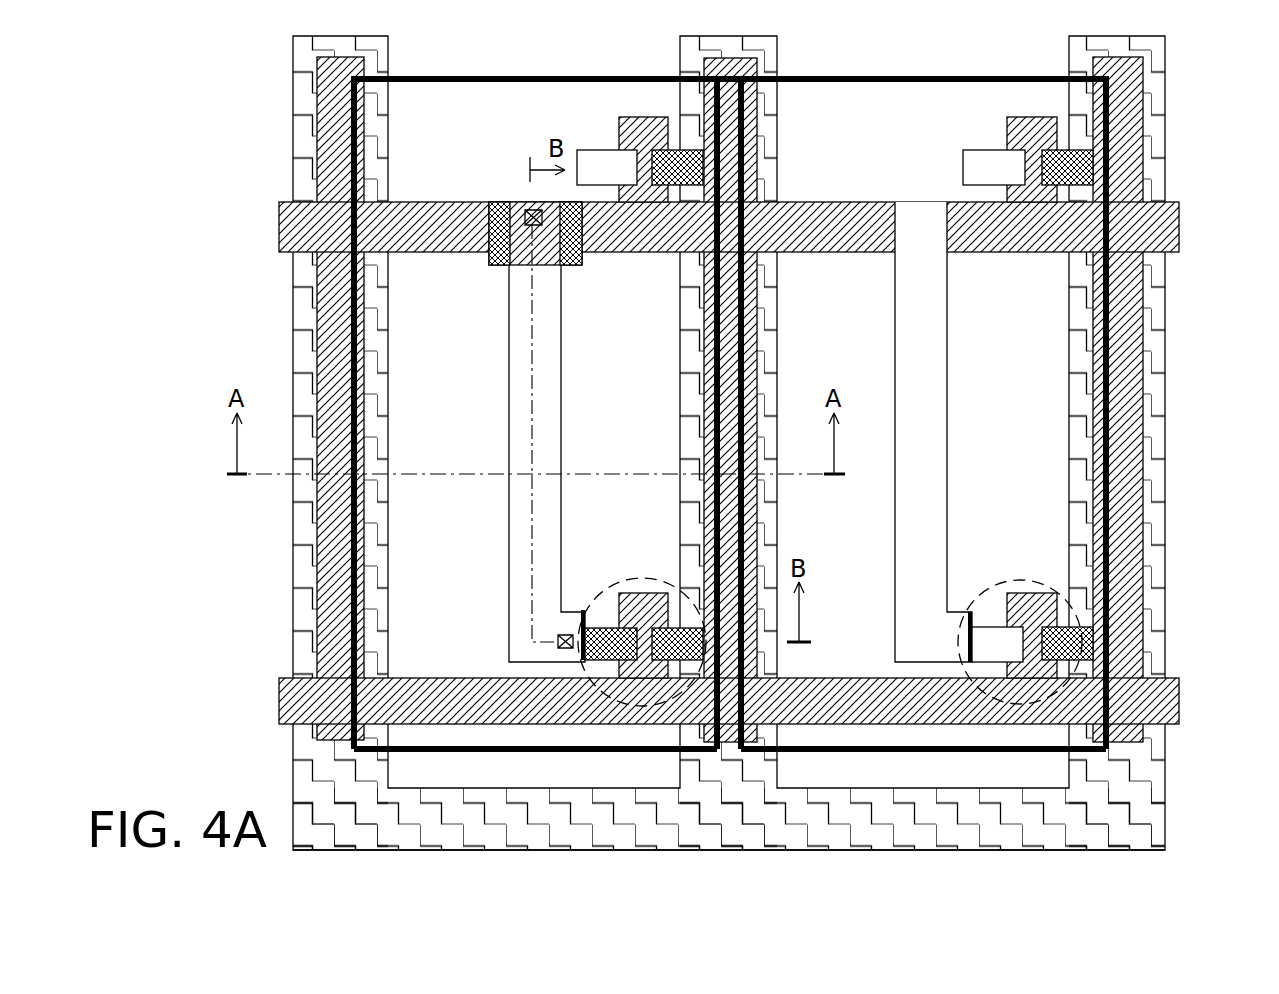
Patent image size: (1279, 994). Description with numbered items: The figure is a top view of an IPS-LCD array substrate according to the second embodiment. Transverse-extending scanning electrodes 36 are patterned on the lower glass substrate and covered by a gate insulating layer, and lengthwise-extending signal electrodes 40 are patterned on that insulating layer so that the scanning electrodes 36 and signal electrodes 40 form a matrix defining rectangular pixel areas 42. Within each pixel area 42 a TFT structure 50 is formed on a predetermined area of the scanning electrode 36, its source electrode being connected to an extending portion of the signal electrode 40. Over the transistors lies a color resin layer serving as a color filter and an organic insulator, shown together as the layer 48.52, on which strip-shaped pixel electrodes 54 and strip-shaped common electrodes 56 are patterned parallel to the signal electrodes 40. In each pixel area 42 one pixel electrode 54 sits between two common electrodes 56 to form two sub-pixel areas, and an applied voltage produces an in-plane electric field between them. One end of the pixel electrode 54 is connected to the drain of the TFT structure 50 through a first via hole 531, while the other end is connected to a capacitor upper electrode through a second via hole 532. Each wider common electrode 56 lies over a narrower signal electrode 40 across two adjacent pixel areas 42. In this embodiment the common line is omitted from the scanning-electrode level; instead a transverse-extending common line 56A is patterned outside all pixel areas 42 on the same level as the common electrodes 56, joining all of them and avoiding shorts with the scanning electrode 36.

The scanning electrode 36 is at (1178, 227).
The signal electrode 40 is at (318, 74).
The pixel area 42 is at (433, 288).
The color resin layer and organic insulator 48.52 is at (833, 748).
The TFT structure 50 is at (625, 573).
The pixel electrode 54 is at (547, 372).
The common electrode 56 is at (384, 372).
The common line 56A is at (1145, 823).
The first via hole 531 is at (558, 636).
The second via hole 532 is at (528, 207).